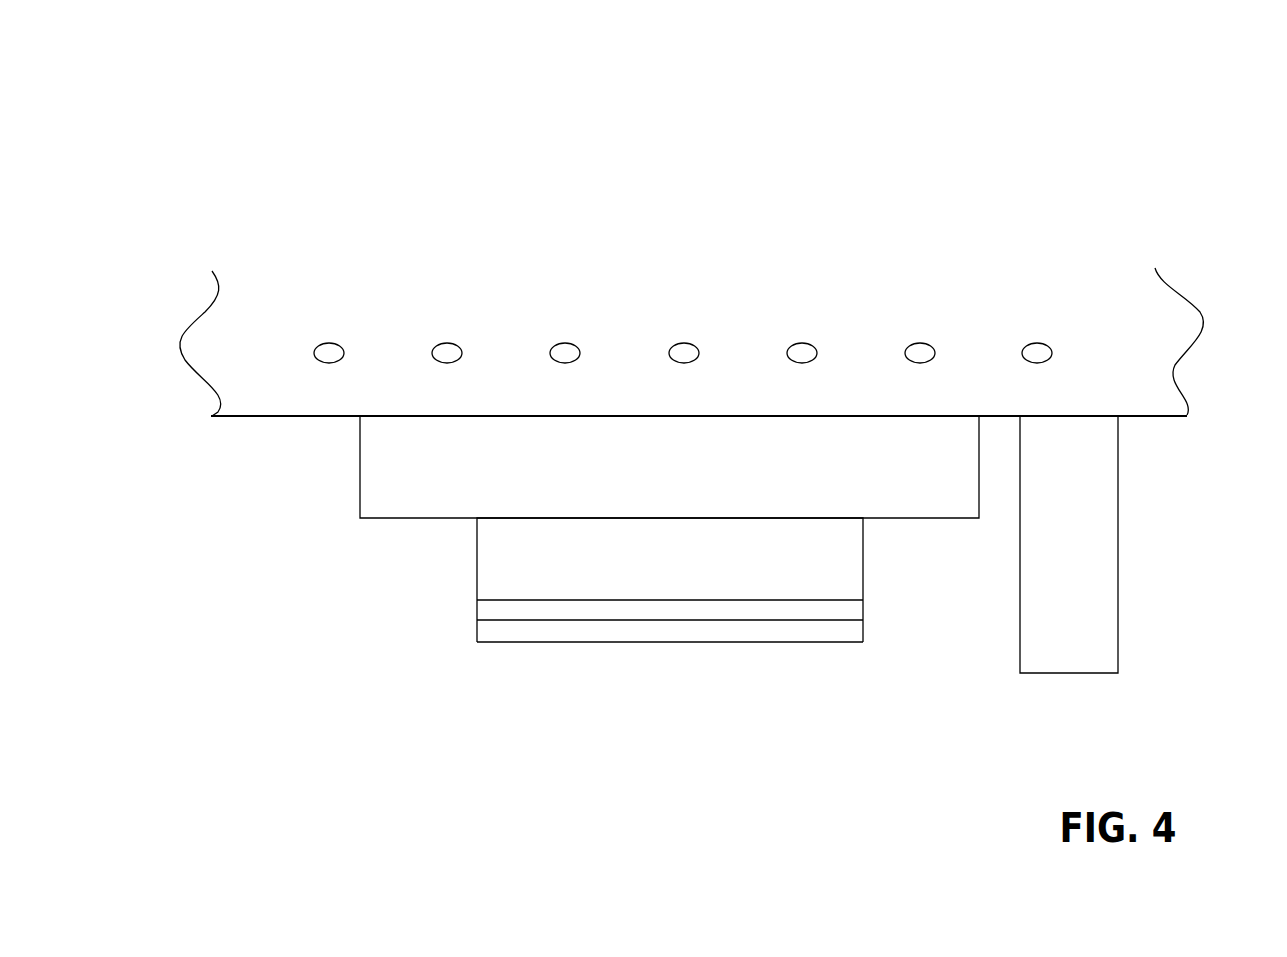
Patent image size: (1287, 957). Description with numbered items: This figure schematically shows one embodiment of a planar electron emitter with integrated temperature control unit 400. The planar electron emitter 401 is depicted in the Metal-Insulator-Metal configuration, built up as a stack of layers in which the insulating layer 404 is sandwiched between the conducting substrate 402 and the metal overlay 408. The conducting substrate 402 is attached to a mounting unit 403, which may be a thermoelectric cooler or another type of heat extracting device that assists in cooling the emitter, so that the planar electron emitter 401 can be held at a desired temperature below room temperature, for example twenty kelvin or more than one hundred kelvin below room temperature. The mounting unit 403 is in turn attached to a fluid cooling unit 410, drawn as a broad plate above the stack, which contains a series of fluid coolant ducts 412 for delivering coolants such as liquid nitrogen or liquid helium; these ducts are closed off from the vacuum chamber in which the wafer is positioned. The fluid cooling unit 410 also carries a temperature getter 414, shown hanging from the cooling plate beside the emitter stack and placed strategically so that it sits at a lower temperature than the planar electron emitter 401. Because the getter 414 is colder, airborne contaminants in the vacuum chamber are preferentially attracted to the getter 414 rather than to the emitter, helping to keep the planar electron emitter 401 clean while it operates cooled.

The planar electron emitter with integrated temperature control unit 400 is at (1020, 199).
The planar electron emitter 401 is at (710, 645).
The conducting substrate 402 is at (543, 556).
The mounting unit 403 is at (428, 474).
The insulating layer 404 is at (512, 612).
The metal overlay 408 is at (652, 628).
The fluid cooling unit 410 is at (1177, 297).
The fluid coolant ducts 412 is at (682, 352).
The temperature getter 414 is at (1117, 488).